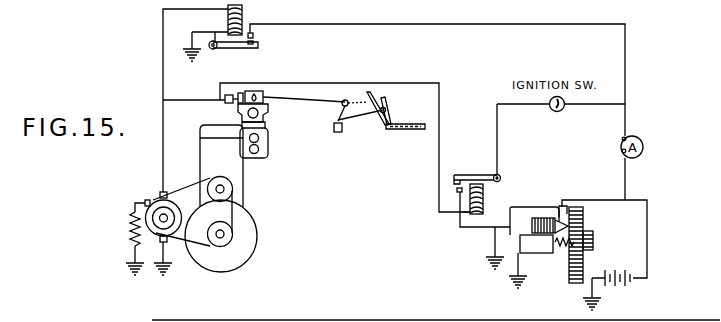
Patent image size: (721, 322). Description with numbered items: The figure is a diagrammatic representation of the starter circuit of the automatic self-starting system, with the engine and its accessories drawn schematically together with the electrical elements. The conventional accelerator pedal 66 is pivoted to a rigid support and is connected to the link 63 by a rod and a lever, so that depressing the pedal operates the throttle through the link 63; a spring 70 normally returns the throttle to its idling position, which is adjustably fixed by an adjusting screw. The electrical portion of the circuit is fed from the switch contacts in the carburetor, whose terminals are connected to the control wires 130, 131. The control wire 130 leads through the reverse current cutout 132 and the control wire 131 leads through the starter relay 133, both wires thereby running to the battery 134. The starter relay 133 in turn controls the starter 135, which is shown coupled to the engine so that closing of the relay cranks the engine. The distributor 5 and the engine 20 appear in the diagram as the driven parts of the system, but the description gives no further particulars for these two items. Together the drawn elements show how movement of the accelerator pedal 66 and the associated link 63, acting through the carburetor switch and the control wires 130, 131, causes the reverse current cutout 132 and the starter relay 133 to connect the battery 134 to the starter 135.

The distributor 5 is at (273, 125).
The engine 20 is at (271, 320).
The link 63 is at (320, 100).
The accelerator pedal 66 is at (389, 107).
The spring 70 is at (358, 96).
The control wire 130 is at (182, 101).
The control wire 131 is at (258, 63).
The reverse current cutout 132 is at (246, 16).
The starter relay 133 is at (492, 196).
The battery 134 is at (620, 292).
The starter 135 is at (541, 255).